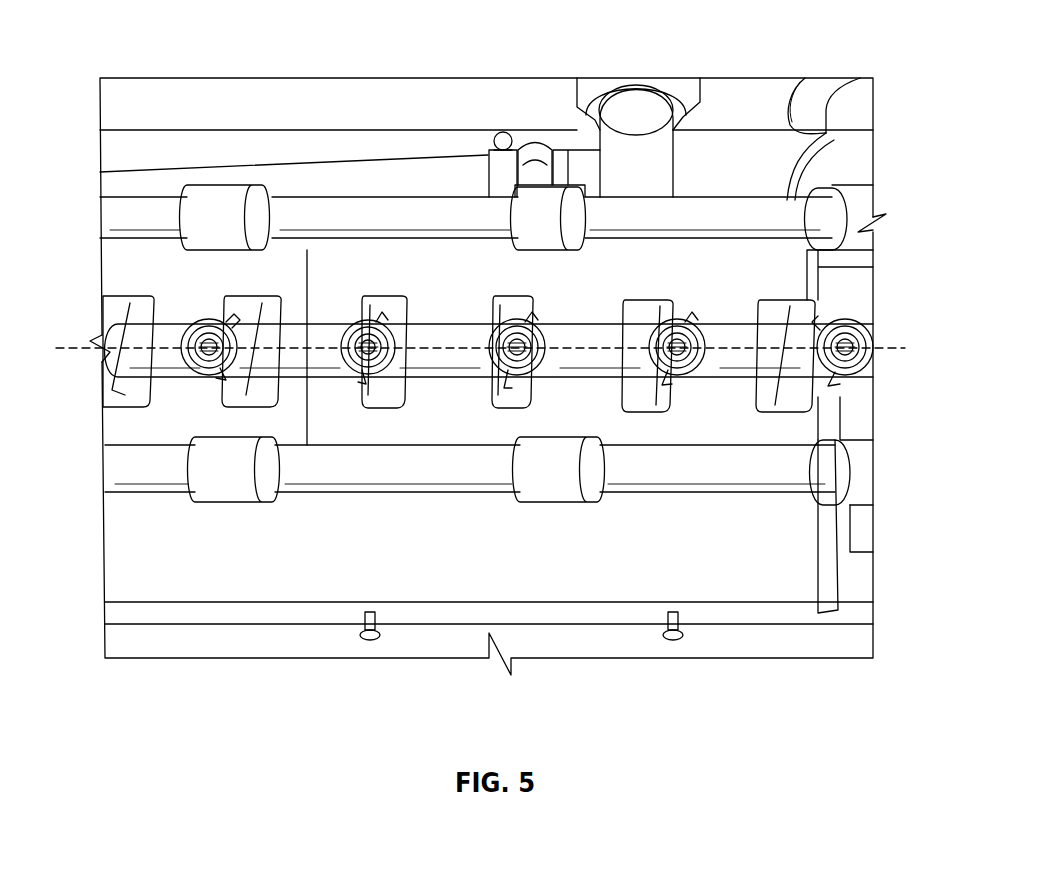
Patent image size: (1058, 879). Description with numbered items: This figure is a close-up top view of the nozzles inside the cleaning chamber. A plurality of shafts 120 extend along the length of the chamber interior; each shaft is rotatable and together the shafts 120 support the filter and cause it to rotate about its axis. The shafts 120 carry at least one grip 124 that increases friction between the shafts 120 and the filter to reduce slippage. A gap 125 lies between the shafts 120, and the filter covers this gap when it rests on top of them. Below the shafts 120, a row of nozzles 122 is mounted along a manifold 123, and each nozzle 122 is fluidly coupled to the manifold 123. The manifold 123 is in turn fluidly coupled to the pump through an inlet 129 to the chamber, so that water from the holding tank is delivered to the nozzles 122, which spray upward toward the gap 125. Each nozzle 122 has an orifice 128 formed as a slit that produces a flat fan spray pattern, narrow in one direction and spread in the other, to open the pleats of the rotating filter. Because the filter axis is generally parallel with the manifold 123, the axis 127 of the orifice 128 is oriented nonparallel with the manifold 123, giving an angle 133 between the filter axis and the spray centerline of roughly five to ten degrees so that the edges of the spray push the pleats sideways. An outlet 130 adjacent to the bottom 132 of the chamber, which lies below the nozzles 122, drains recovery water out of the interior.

The shaft 120 is at (783, 212).
The nozzle 122 is at (640, 340).
The manifold 123 is at (747, 333).
The grip 124 is at (555, 470).
The gap 125 is at (307, 277).
The axis of the orifice 127 is at (88, 352).
The orifice 128 is at (490, 325).
The inlet 129 is at (643, 117).
The outlet 130 is at (826, 95).
The bottom 132 is at (783, 578).
The angle 133 is at (830, 342).